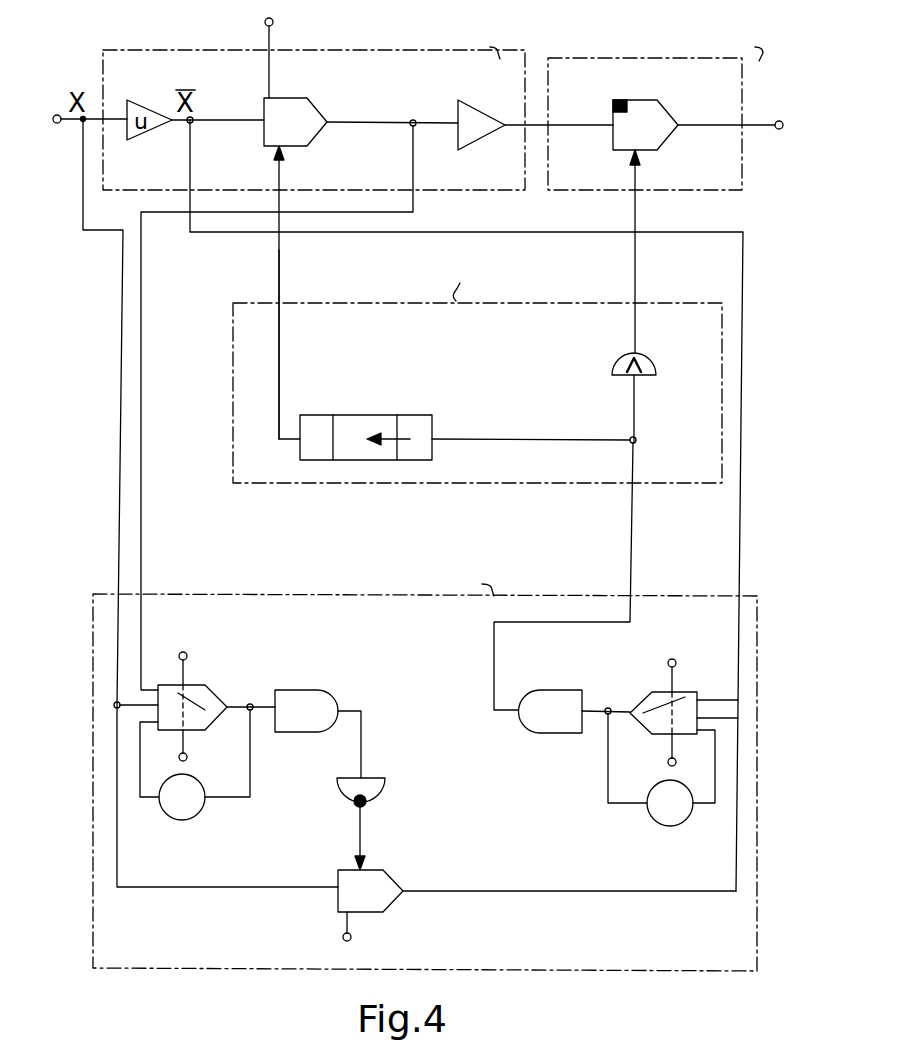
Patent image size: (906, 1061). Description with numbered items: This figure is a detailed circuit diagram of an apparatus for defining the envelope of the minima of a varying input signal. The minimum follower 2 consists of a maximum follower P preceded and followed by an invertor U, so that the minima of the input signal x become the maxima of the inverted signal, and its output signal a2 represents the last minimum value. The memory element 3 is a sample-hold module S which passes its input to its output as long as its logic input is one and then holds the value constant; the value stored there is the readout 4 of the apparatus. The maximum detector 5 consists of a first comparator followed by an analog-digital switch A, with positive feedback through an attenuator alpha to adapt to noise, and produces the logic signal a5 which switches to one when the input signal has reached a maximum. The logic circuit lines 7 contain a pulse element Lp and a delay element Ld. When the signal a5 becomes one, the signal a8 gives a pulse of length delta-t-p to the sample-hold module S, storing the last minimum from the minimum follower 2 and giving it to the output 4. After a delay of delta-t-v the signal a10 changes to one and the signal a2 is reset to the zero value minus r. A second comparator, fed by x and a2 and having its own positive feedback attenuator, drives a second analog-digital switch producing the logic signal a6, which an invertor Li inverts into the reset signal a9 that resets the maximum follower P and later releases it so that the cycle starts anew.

The minimum follower 2 is at (358, 351).
The memory element 3 is at (655, 112).
The readout 4 is at (748, 129).
The maximum detector 5 is at (425, 707).
The circuit lines 7 is at (477, 316).
The output signal of the minimum follower a2 is at (282, 389).
The output signal of the maximum detector a5 is at (563, 576).
The logic signal of the second comparator stage a6 is at (372, 744).
The pulse signal to the sample-hold module a8 is at (653, 296).
The reset signal a9 is at (381, 835).
The delayed signal a10 is at (309, 344).